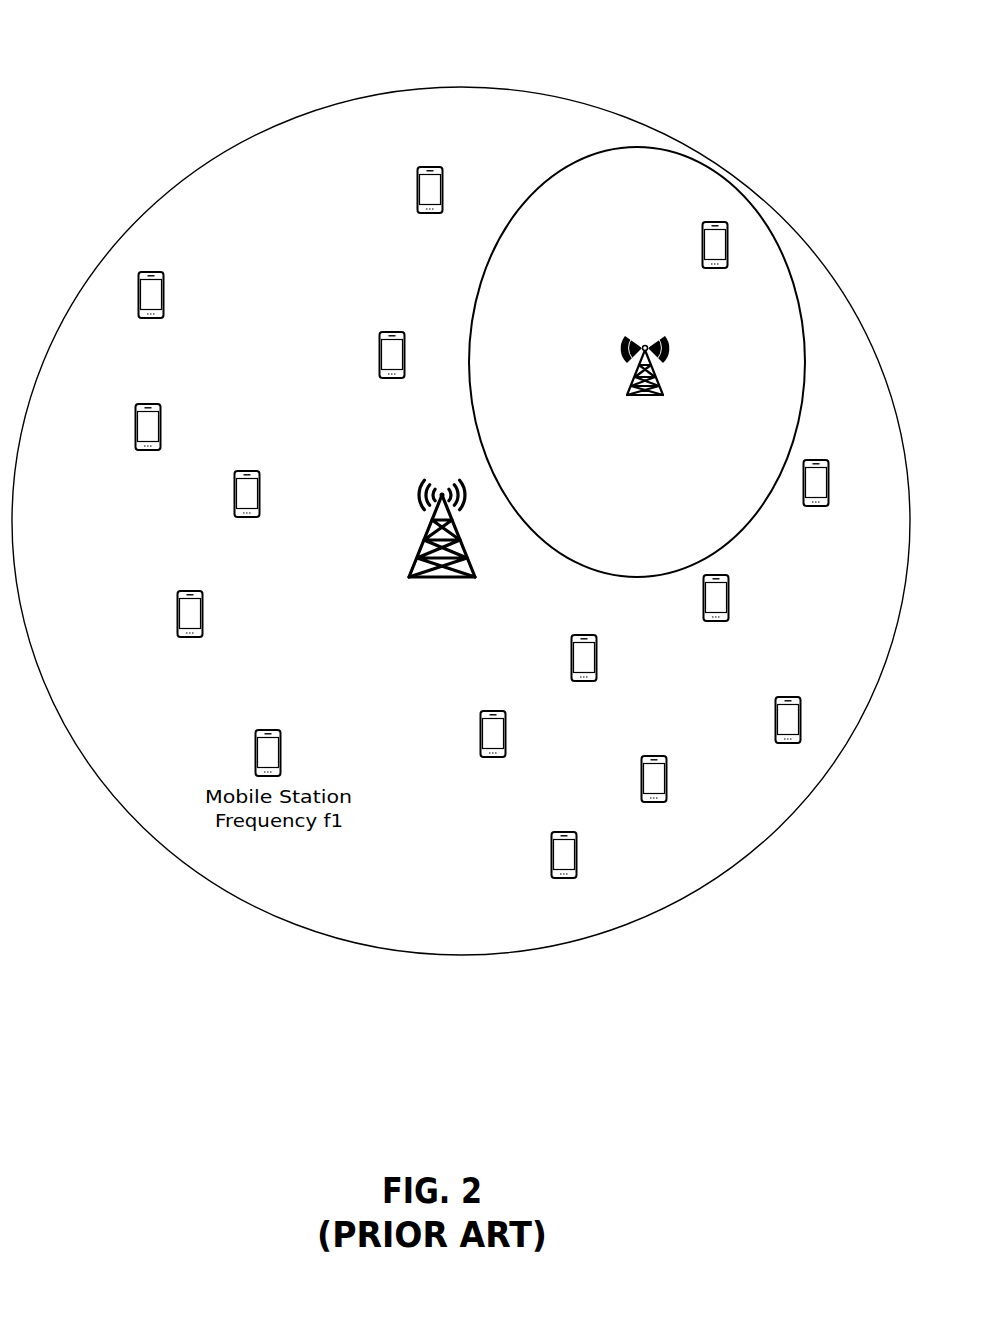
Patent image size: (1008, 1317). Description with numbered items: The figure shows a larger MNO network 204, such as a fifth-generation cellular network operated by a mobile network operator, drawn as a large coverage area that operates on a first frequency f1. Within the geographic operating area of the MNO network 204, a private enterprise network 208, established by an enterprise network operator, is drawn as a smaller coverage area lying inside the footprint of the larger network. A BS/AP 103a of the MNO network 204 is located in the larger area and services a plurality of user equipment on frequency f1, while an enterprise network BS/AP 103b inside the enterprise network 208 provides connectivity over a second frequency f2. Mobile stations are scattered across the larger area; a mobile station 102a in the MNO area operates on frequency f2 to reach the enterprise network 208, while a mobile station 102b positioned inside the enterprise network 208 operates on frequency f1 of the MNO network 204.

The MNO network 204 is at (583, 117).
The enterprise network 208 is at (493, 291).
The mobile station 102a is at (375, 352).
The mobile station 102b is at (728, 257).
The BS/AP of the MNO network 103a is at (418, 540).
The enterprise network BS/AP 103b is at (627, 373).